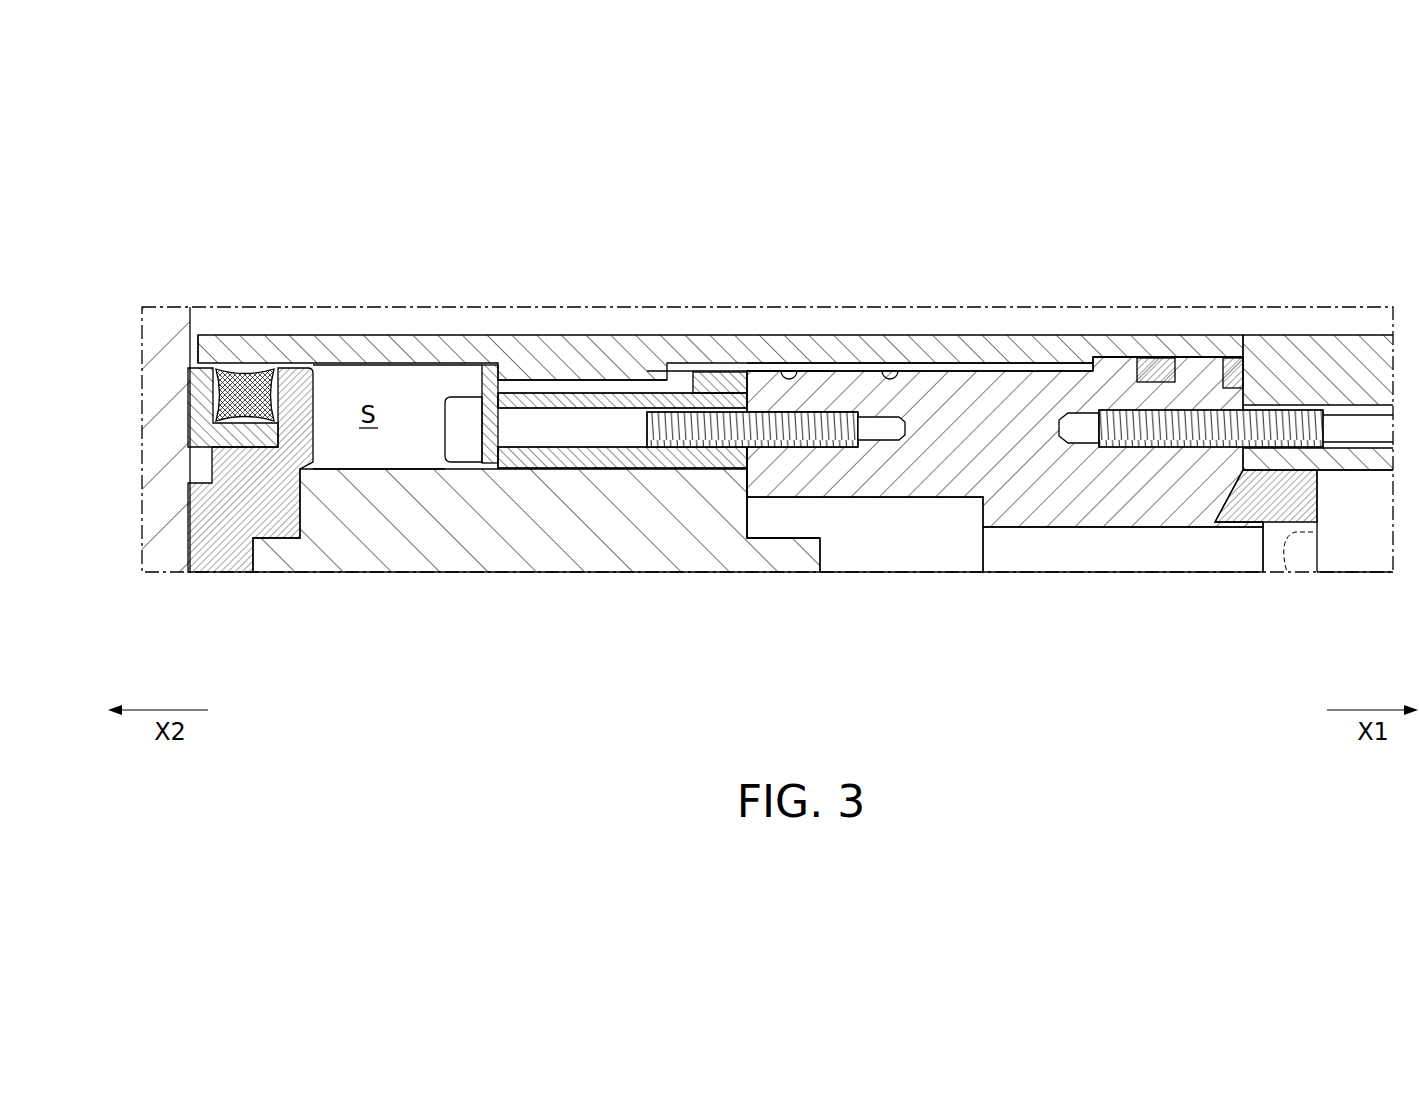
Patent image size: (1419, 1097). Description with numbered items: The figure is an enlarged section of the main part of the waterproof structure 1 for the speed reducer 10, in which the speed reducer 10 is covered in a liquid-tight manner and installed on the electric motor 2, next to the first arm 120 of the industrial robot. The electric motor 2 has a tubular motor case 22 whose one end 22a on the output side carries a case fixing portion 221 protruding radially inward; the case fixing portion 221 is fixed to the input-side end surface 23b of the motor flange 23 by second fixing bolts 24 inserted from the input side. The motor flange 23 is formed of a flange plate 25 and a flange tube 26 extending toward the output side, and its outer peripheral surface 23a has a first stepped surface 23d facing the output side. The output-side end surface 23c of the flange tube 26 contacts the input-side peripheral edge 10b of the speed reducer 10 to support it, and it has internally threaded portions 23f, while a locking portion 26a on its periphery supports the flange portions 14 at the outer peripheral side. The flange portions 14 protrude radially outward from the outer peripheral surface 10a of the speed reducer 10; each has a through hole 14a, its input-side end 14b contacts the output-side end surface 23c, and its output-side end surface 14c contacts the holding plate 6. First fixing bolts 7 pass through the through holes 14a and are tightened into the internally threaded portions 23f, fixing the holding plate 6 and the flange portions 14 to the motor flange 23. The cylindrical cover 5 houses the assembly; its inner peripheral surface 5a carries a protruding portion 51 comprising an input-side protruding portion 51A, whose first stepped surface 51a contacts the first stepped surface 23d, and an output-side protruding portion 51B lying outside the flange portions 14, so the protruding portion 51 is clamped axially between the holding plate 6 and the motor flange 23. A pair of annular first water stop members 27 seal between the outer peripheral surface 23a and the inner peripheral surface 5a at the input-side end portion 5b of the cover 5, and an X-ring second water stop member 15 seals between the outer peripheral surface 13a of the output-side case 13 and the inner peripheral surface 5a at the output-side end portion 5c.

The waterproof structure 1 is at (1236, 236).
The electric motor 2 is at (1370, 487).
The cover 5 is at (838, 322).
The inner peripheral surface 5a is at (907, 362).
The input-side end portion 5b is at (1250, 355).
The output-side end portion 5c is at (198, 345).
The holding plate 6 is at (490, 400).
The first fixing bolt 7 is at (585, 430).
The speed reducer 10 is at (392, 550).
The outer peripheral surface 10a is at (420, 465).
The input-side peripheral edge 10b is at (768, 490).
The output-side case 13 is at (222, 555).
The outer peripheral surface 13a is at (290, 395).
The flange portion 14 is at (588, 393).
The through hole 14a is at (537, 393).
The input-side end 14b is at (752, 453).
The output-side end surface 14c is at (467, 478).
The second water stop member 15 is at (243, 368).
The motor case 22 is at (1328, 369).
The one end 22a is at (1243, 462).
The case fixing portion 221 is at (1342, 360).
The motor flange 23 is at (1018, 357).
The outer peripheral surface 23a is at (967, 371).
The input-side end surface 23b is at (1300, 357).
The output-side end surface 23c is at (740, 480).
The first stepped surface 23d is at (1073, 357).
The internally threaded portion 23f is at (852, 448).
The second fixing bolt 24 is at (1348, 433).
The flange plate 25 is at (1118, 527).
The flange tube 26 is at (963, 497).
The locking portion 26a is at (707, 372).
The first water stop member 27 is at (1233, 358).
The protruding portion 51 is at (803, 191).
The input-side protruding portion 51A is at (777, 371).
The output-side protruding portion 51B is at (647, 371).
The first stepped surface 51a is at (1122, 357).
The first arm 120 is at (162, 325).